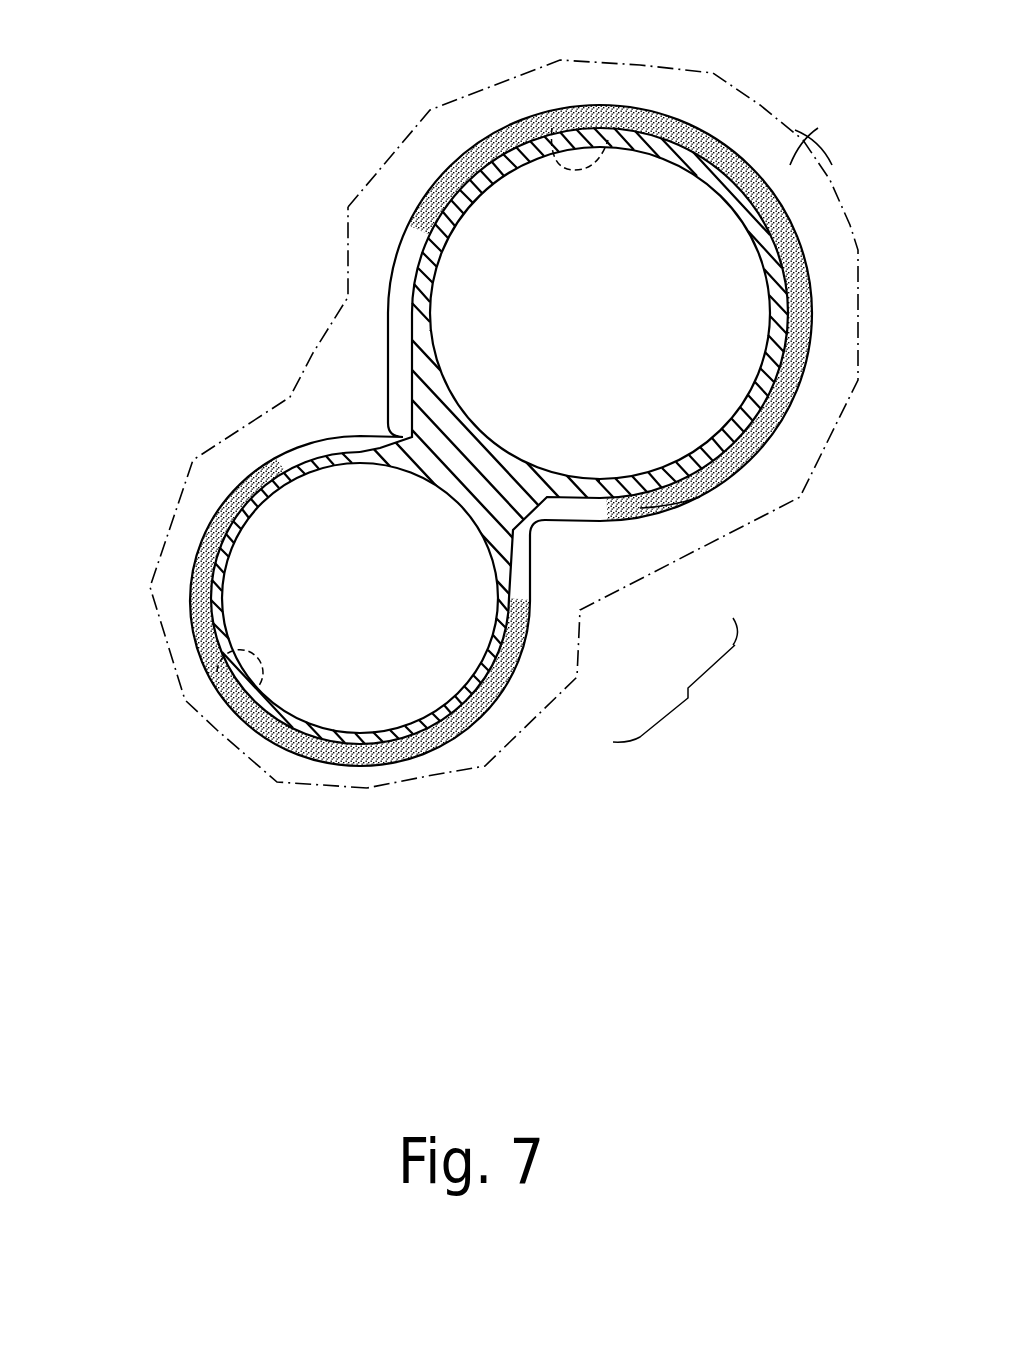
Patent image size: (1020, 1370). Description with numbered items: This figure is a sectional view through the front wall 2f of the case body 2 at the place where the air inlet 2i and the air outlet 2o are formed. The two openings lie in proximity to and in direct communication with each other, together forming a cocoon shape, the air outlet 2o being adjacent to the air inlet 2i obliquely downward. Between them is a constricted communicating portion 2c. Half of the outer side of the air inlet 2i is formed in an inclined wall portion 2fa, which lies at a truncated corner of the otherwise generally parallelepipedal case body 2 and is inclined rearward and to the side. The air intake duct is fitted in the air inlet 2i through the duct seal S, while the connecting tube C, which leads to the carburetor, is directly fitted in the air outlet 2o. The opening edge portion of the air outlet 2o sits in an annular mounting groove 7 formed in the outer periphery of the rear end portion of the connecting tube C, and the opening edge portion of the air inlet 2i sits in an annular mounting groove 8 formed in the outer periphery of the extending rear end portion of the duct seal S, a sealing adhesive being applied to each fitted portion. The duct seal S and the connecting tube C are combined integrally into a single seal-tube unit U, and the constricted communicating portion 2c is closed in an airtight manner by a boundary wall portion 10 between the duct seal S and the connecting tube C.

The case body 2 is at (460, 419).
The front wall 2f is at (803, 140).
The inclined wall portion 2fa is at (187, 520).
The air outlet 2o is at (605, 150).
The air inlet 2i is at (238, 717).
The constricted communicating portion 2c is at (417, 482).
The boundary wall portion 10 is at (465, 460).
The annular mounting groove 7 is at (777, 427).
The annular mounting groove 8 is at (438, 760).
The duct seal S is at (517, 667).
The connecting tube C is at (712, 492).
The seal-tube unit U is at (675, 680).